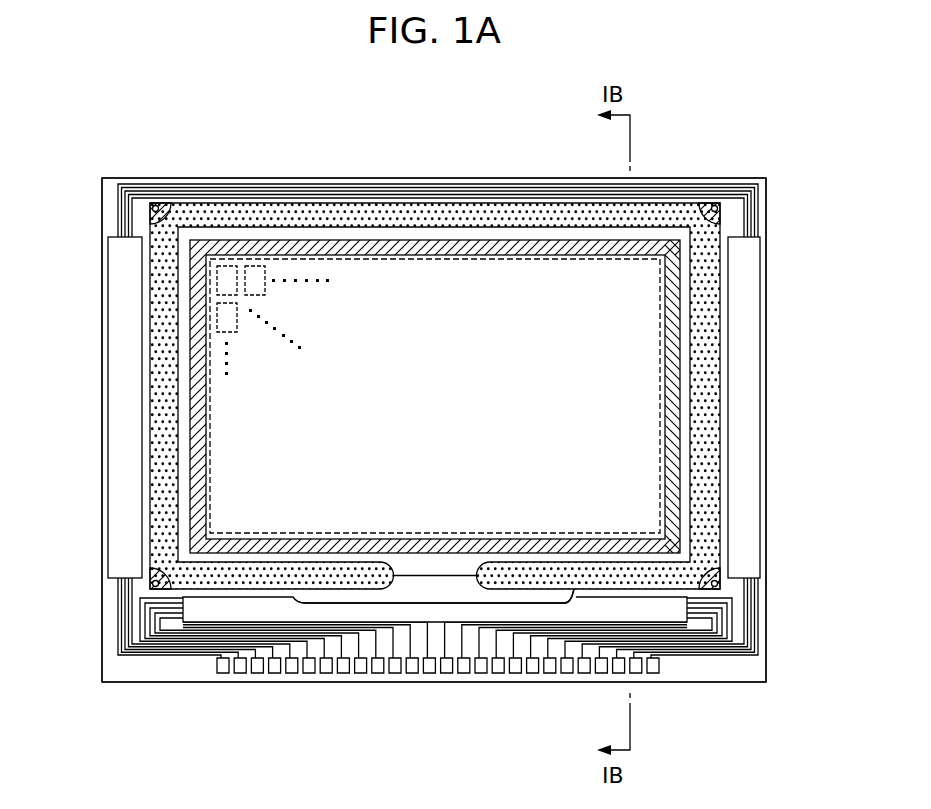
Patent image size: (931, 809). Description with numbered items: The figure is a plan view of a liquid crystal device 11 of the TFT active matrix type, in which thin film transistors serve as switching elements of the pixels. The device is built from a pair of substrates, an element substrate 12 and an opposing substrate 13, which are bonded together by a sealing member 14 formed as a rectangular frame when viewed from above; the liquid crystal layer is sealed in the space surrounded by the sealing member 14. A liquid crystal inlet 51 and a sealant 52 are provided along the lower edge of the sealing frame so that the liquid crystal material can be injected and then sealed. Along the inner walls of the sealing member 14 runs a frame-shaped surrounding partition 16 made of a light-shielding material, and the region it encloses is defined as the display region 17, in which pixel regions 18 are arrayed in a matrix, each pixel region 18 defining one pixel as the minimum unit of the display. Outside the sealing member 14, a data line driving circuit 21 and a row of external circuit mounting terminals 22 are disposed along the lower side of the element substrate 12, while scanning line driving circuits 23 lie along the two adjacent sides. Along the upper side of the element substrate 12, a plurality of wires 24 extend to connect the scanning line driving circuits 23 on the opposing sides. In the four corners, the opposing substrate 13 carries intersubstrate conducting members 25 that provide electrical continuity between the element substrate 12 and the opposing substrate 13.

The liquid crystal device 11 is at (685, 126).
The element substrate 12 is at (442, 178).
The opposing substrate 13 is at (503, 203).
The sealing member 14 is at (705, 350).
The surrounding partition 16 is at (672, 305).
The display region 17 is at (203, 378).
The pixel region 18 is at (227, 270).
The data line driving circuit 21 is at (207, 615).
The external circuit mounting terminals 22 is at (322, 674).
The scanning line driving circuit 23 is at (122, 300).
The wires 24 is at (376, 191).
The intersubstrate conducting member 25 is at (156, 207).
The liquid crystal inlet 51 is at (473, 599).
The sealant 52 is at (418, 599).